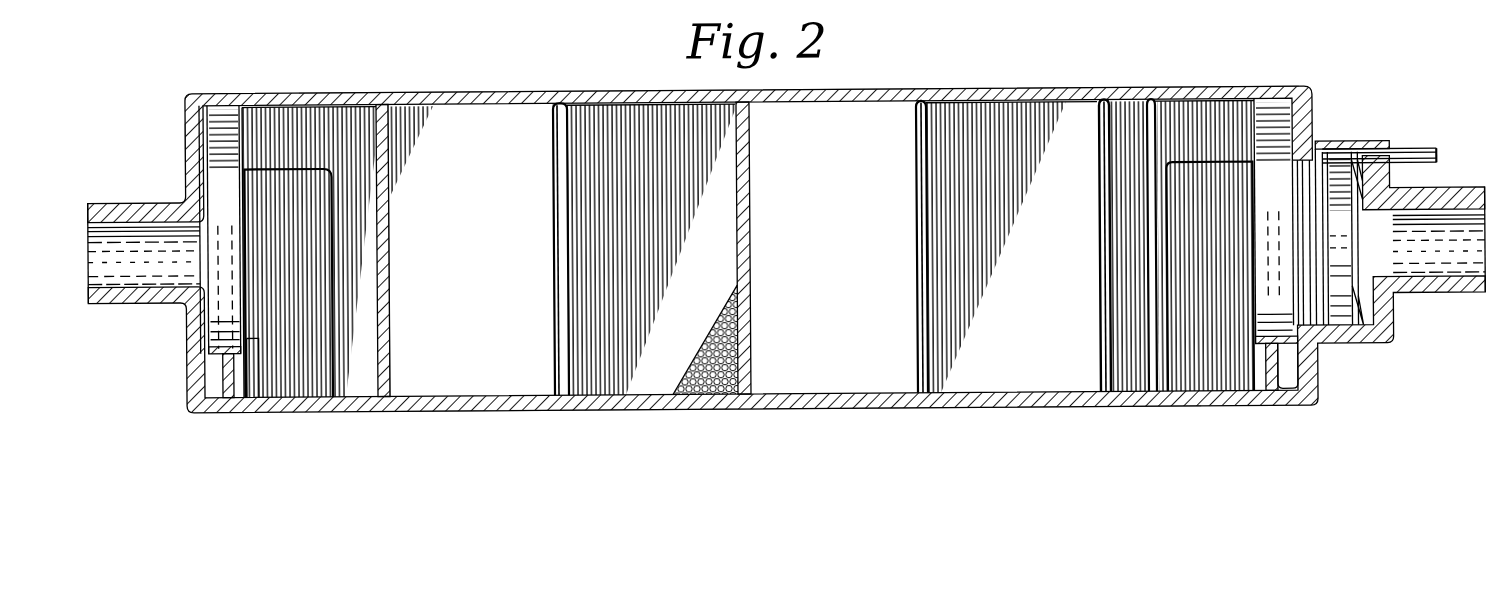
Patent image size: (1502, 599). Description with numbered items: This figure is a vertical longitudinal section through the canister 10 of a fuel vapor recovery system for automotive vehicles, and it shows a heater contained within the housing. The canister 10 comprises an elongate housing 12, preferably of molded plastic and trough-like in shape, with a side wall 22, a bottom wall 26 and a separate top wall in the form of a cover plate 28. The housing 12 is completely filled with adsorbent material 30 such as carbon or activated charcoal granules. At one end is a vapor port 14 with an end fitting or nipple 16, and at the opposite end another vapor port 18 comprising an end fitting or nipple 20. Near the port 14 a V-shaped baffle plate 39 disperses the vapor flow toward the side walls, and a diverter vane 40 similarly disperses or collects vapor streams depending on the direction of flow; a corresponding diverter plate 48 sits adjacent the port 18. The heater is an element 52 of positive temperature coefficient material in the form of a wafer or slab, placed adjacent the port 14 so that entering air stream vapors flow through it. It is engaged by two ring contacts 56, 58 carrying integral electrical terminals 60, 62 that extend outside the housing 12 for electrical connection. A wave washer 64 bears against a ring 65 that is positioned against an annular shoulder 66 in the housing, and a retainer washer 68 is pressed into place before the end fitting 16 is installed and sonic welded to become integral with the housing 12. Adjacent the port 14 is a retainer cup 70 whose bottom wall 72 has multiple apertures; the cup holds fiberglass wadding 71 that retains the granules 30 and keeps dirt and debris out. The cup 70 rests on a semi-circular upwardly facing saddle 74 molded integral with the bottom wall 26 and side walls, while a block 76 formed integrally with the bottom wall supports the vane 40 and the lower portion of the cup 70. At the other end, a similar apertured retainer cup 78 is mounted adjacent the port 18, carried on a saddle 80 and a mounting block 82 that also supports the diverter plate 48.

The canister 10 is at (1122, 40).
The housing 12 is at (958, 88).
The vapor port 14 is at (1391, 137).
The end fitting 16 is at (1470, 287).
The vapor port 18 is at (172, 164).
The end fitting 20 is at (138, 200).
The side wall 22 is at (509, 122).
The bottom wall 26 is at (860, 403).
The cover plate 28 is at (633, 70).
The adsorbent material 30 is at (693, 412).
The baffle plate 39 is at (1105, 252).
The diverter vane 40 is at (1208, 182).
The diverter plate 48 is at (320, 337).
The PTC element 52 is at (1340, 166).
The ring contact 56 is at (1320, 206).
The ring contact 58 is at (1357, 256).
The electrical terminal 60 is at (1419, 151).
The electrical terminal 62 is at (1438, 162).
The wave washer 64 is at (1320, 242).
The ring 65 is at (1312, 272).
The annular shoulder 66 is at (1297, 178).
The retainer washer 68 is at (1372, 319).
The retainer cup 70 is at (1296, 102).
The fiberglass wadding 71 is at (1268, 146).
The bottom wall 72 is at (1317, 110).
The saddle 74 is at (1287, 371).
The block 76 is at (1257, 377).
The retainer cup 78 is at (226, 136).
The saddle 80 is at (225, 381).
The mounting block 82 is at (247, 384).